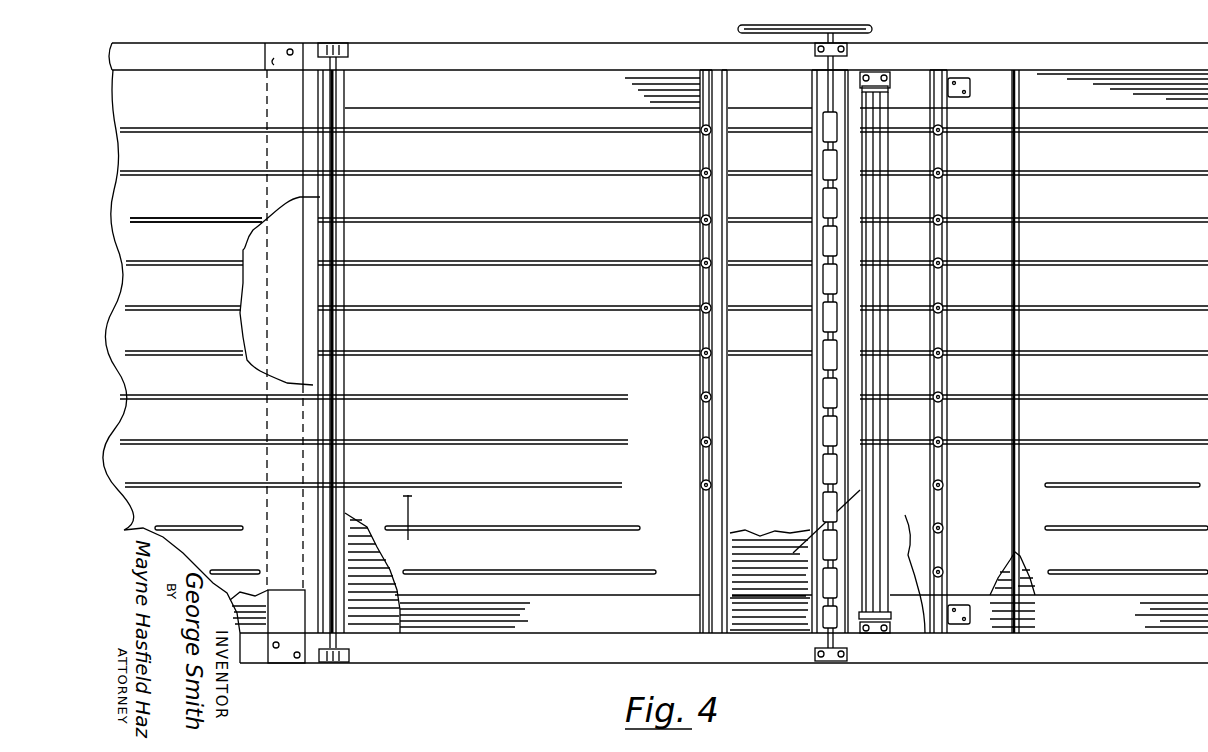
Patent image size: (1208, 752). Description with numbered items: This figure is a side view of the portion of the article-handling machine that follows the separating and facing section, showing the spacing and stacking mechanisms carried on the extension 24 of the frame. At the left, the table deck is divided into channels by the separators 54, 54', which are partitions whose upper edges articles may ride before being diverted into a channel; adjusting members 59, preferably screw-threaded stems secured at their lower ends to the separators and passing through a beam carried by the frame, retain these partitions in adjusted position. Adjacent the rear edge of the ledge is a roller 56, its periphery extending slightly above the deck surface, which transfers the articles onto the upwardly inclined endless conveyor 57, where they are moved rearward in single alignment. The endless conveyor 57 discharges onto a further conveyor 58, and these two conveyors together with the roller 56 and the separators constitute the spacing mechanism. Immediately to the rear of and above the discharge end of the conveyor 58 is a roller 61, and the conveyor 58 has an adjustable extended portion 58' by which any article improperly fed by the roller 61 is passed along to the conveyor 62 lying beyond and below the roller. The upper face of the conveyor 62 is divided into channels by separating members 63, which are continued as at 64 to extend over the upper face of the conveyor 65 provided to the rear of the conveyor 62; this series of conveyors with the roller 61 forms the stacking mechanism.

The extension 24 is at (484, 43).
The separator 54 is at (211, 353).
The separator 54' is at (196, 201).
The roller 56 is at (332, 300).
The endless conveyor 57 is at (725, 577).
The conveyor 58 is at (797, 366).
The adjustable extended portion 58' is at (795, 608).
The adjusting member 59 is at (705, 440).
The roller 61 is at (825, 418).
The conveyor 62 is at (947, 351).
The separating member 63 is at (912, 326).
The separator continuation 64 is at (1168, 312).
The conveyor 65 is at (1049, 505).